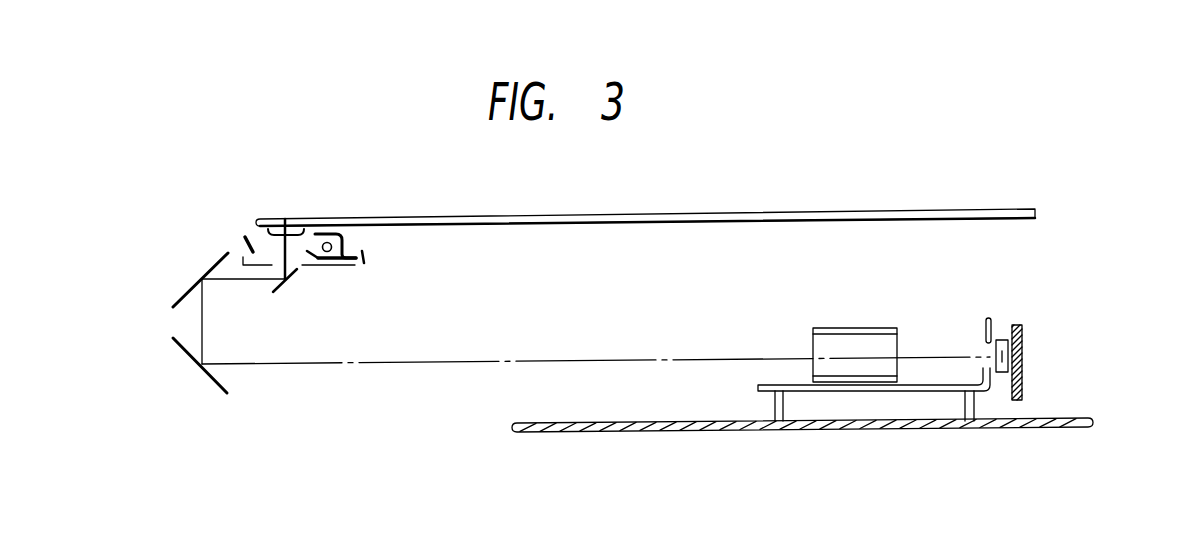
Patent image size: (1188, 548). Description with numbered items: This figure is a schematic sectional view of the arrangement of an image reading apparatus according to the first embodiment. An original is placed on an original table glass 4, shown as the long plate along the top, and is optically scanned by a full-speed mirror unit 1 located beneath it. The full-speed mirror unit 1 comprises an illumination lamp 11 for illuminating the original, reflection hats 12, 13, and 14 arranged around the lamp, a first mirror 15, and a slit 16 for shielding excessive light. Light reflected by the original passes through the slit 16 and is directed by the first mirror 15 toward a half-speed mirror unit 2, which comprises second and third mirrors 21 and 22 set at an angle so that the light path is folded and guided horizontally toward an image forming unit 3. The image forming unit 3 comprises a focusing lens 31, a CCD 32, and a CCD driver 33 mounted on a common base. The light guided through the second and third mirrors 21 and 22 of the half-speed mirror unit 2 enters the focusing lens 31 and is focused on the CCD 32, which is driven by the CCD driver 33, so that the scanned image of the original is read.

The full-speed mirror unit 1 is at (328, 247).
The half-speed mirror unit 2 is at (548, 331).
The image forming unit 3 is at (802, 367).
The original table glass 4 is at (628, 213).
The illumination lamp 11 is at (328, 242).
The reflection hat 12 is at (346, 235).
The reflection hat 13 is at (337, 267).
The reflection hat 14 is at (245, 233).
The first mirror 15 is at (283, 287).
The slit 16 is at (285, 218).
The second mirror 21 is at (213, 270).
The third mirror 22 is at (218, 393).
The focusing lens 31 is at (848, 328).
The CCD 32 is at (1003, 338).
The CCD driver 33 is at (1022, 326).